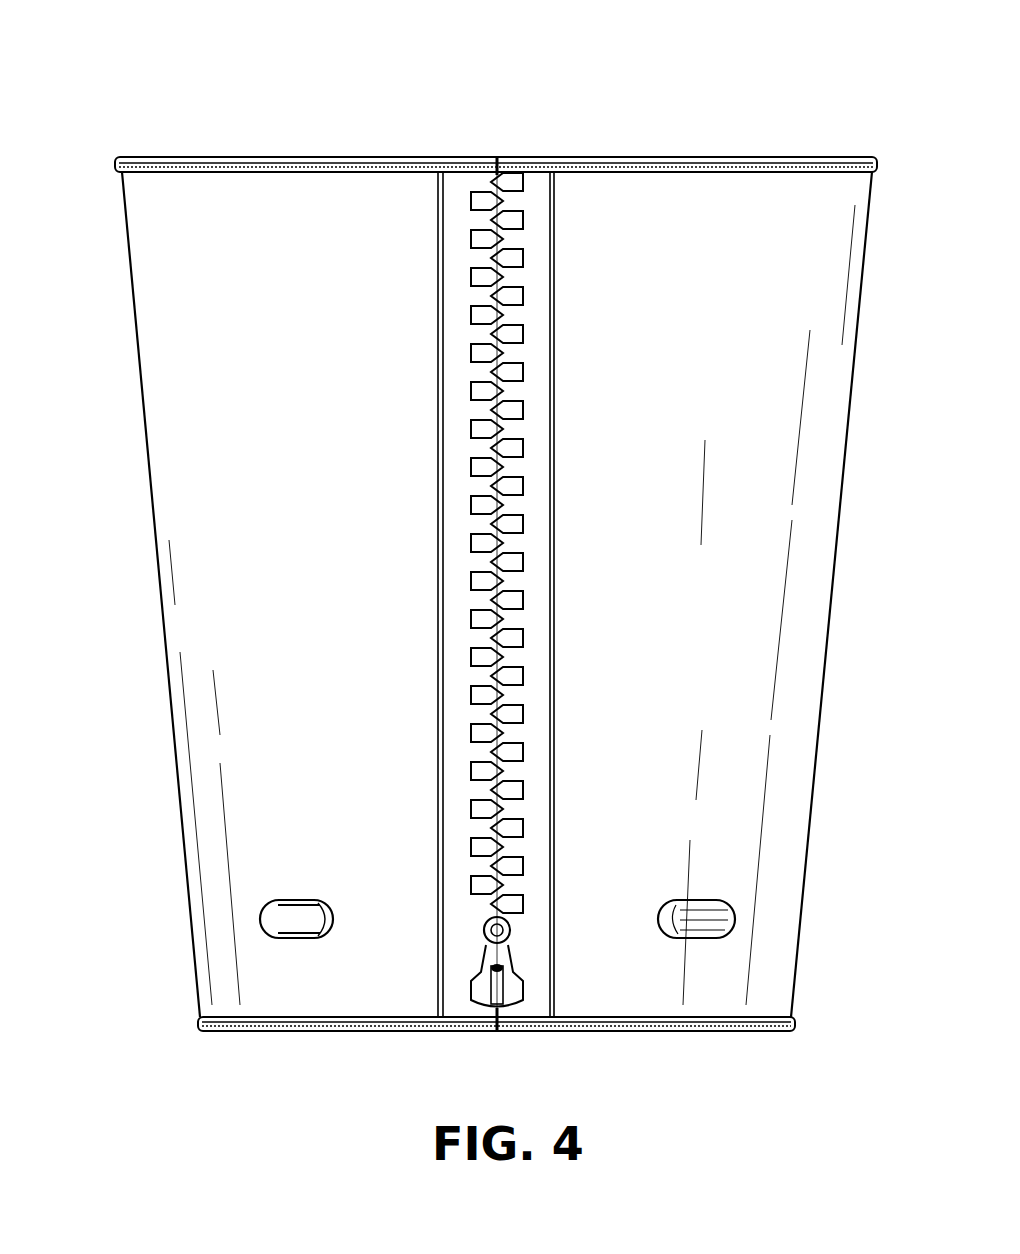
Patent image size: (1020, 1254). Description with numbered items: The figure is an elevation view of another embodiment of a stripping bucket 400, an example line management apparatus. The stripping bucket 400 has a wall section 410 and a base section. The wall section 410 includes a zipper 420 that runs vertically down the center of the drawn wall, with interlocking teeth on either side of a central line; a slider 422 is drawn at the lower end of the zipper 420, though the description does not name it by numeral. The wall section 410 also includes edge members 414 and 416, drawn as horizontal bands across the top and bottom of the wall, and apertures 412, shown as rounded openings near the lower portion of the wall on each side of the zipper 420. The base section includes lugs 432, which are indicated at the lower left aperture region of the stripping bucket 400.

The stripping bucket 400 is at (176, 88).
The wall section 410 is at (299, 322).
The apertures 412 is at (327, 900).
The edge member 414 is at (418, 160).
The edge member 416 is at (630, 1032).
The zipper 420 is at (503, 293).
The zipper slider 422 is at (490, 950).
The lugs 432 is at (272, 912).